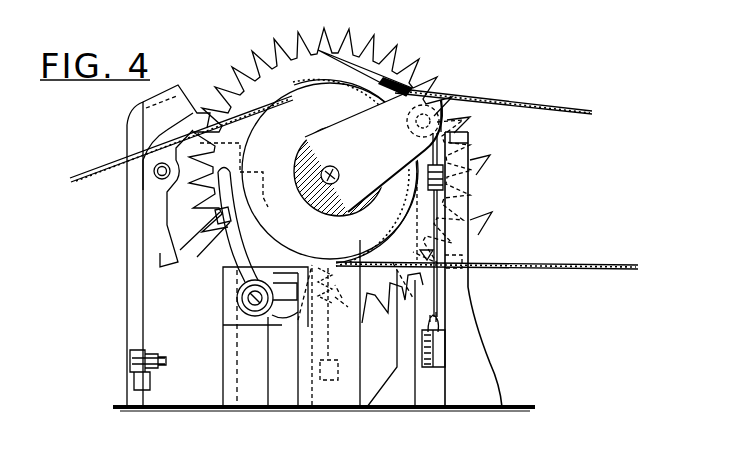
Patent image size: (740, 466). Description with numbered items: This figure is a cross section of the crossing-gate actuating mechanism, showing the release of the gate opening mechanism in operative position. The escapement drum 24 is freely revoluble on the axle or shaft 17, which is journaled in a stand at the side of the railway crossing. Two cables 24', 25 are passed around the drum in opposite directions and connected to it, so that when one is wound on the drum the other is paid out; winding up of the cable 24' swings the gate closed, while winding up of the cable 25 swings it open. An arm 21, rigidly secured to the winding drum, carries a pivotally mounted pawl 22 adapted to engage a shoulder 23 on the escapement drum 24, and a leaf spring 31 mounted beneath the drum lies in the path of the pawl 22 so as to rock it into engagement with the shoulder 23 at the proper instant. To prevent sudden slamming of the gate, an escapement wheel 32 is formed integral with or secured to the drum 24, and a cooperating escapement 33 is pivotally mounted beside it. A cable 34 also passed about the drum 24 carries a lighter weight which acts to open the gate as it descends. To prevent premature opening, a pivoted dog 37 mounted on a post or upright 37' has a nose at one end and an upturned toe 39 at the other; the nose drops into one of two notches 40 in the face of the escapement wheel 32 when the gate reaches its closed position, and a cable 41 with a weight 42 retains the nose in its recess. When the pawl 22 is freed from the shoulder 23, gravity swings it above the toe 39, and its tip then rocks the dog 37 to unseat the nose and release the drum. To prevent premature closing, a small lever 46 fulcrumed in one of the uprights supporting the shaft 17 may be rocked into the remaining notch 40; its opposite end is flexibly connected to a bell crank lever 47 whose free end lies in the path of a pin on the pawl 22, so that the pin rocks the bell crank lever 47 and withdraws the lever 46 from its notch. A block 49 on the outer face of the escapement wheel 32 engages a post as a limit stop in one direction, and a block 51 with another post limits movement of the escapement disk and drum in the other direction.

The axle or shaft 17 is at (329, 166).
The arm 21 is at (407, 93).
The pawl 22 is at (362, 65).
The shoulder 23 is at (233, 97).
The escapement drum 24 is at (325, 147).
The cable 24' is at (487, 283).
The cable 25 is at (568, 110).
The leaf spring 31 is at (272, 392).
The escapement wheel 32 is at (292, 123).
The escapement 33 is at (152, 240).
The cable 34 is at (95, 168).
The pivoted dog 37 is at (464, 169).
The post or upright 37' is at (479, 247).
The upturned toe 39 is at (450, 178).
The notches or recesses 40 is at (214, 218).
The cable 41 is at (433, 247).
The weight 42 is at (443, 345).
The small lever 46 is at (327, 263).
The bell crank lever 47 is at (232, 236).
The block 49 is at (247, 147).
The block 51 is at (263, 197).